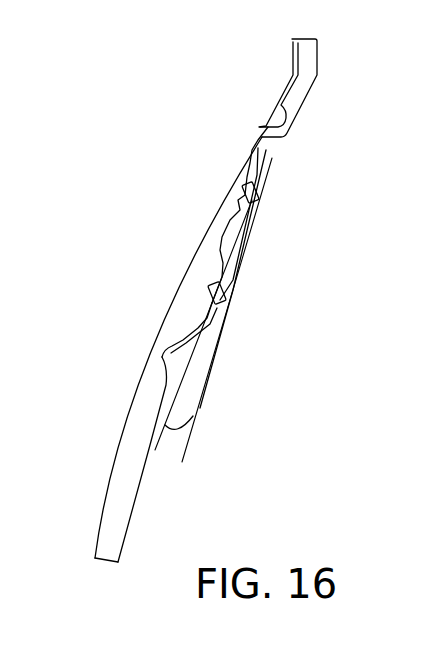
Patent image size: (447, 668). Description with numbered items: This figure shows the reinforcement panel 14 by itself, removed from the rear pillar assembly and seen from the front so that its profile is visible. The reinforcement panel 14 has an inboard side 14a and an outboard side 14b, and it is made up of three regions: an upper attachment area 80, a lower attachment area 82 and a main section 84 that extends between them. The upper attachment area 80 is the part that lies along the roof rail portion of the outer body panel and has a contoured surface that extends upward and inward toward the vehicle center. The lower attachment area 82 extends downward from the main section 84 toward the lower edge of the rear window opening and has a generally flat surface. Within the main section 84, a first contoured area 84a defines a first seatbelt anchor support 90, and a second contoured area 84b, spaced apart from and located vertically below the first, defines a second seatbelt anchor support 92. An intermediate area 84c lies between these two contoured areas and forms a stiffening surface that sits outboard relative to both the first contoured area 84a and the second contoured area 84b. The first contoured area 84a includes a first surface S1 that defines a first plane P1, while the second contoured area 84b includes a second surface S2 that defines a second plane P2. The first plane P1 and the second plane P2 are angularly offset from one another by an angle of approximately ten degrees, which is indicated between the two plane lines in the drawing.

The reinforcement panel 14 is at (109, 147).
The inboard side 14a is at (125, 541).
The outboard side 14b is at (160, 351).
The upper attachment area 80 is at (273, 38).
The lower attachment area 82 is at (124, 368).
The main section 84 is at (199, 135).
The first contoured area 84a is at (262, 180).
The second contoured area 84b is at (240, 278).
The intermediate area 84c is at (228, 242).
The first seatbelt anchor support 90 is at (243, 188).
The second seatbelt anchor support 92 is at (208, 290).
The first plane P1 is at (212, 365).
The second plane P2 is at (156, 450).
The first surface S1 is at (260, 200).
The second surface S2 is at (233, 268).